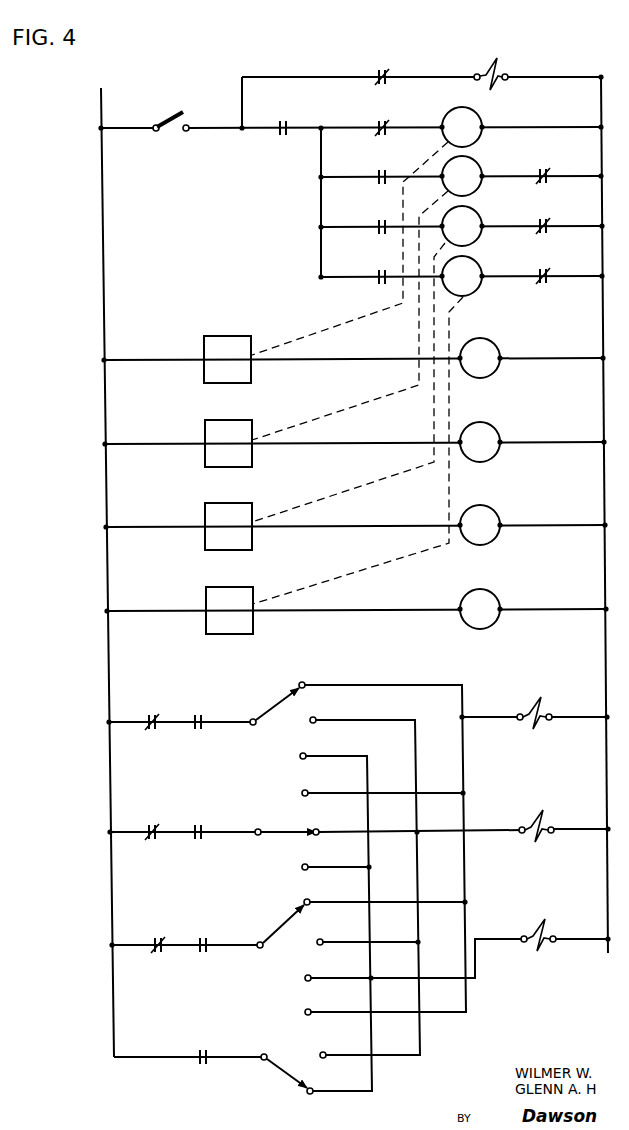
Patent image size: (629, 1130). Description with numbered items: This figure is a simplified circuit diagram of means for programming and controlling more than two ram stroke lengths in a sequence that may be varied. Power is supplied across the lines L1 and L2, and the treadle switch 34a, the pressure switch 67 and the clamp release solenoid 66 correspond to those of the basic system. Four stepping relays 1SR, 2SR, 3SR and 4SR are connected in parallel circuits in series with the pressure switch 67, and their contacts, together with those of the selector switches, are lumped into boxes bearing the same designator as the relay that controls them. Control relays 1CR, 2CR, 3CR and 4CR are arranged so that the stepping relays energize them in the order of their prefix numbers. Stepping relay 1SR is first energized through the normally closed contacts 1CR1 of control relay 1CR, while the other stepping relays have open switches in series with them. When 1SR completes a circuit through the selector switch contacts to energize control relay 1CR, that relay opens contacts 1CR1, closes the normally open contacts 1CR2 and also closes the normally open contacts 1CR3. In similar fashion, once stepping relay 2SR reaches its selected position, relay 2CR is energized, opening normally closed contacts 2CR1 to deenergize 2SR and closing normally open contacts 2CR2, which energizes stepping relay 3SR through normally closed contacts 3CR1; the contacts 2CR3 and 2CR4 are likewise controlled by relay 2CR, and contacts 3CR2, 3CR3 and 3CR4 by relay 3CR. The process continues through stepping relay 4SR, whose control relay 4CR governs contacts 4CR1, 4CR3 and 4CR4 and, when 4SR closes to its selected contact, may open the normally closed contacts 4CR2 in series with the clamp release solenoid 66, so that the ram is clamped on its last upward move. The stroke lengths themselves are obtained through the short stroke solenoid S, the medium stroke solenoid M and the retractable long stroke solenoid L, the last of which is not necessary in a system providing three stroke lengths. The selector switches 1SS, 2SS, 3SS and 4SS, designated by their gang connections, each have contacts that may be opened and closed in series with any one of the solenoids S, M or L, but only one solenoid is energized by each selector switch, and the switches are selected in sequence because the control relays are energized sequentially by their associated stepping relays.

The treadle switch 34a is at (170, 118).
The clamp release solenoid 66 is at (500, 70).
The pressure switch 67 is at (281, 122).
The line L1 is at (101, 168).
The line L2 is at (603, 165).
The stepping relay 1SR is at (344, 245).
The stepping relay 2SR is at (345, 311).
The stepping relay 3SR is at (345, 378).
The stepping relay 4SR is at (345, 445).
The control relay 1CR is at (479, 358).
The control relay 2CR is at (479, 442).
The control relay 3CR is at (479, 525).
The control relay 4CR is at (479, 609).
The normally closed contacts 4CR2 is at (378, 71).
The normally closed switch contacts 1CR1 is at (378, 121).
The normally open contacts 1CR2 is at (378, 170).
The normally open contacts 2CR2 is at (378, 220).
The relay contact 3CR2 is at (378, 270).
The normally closed contacts 2CR1 is at (543, 168).
The normally closed contacts 3CR1 is at (543, 218).
The relay contact 4CR1 is at (543, 268).
The relay contact 2CR3 is at (144, 713).
The normally open contacts 1CR3 is at (198, 713).
The selector switch 1SS is at (269, 706).
The relay contact 3CR3 is at (141, 823).
The relay contact 2CR4 is at (199, 823).
The selector switch 2SS is at (255, 821).
The relay contact 4CR3 is at (147, 936).
The relay contact 3CR4 is at (206, 936).
The selector switch 3SS is at (274, 926).
The relay contact 4CR4 is at (206, 1048).
The selector switch 4SS is at (277, 1060).
The short stroke solenoid S is at (537, 705).
The medium stroke solenoid M is at (538, 818).
The retractable long stroke solenoid L is at (539, 928).